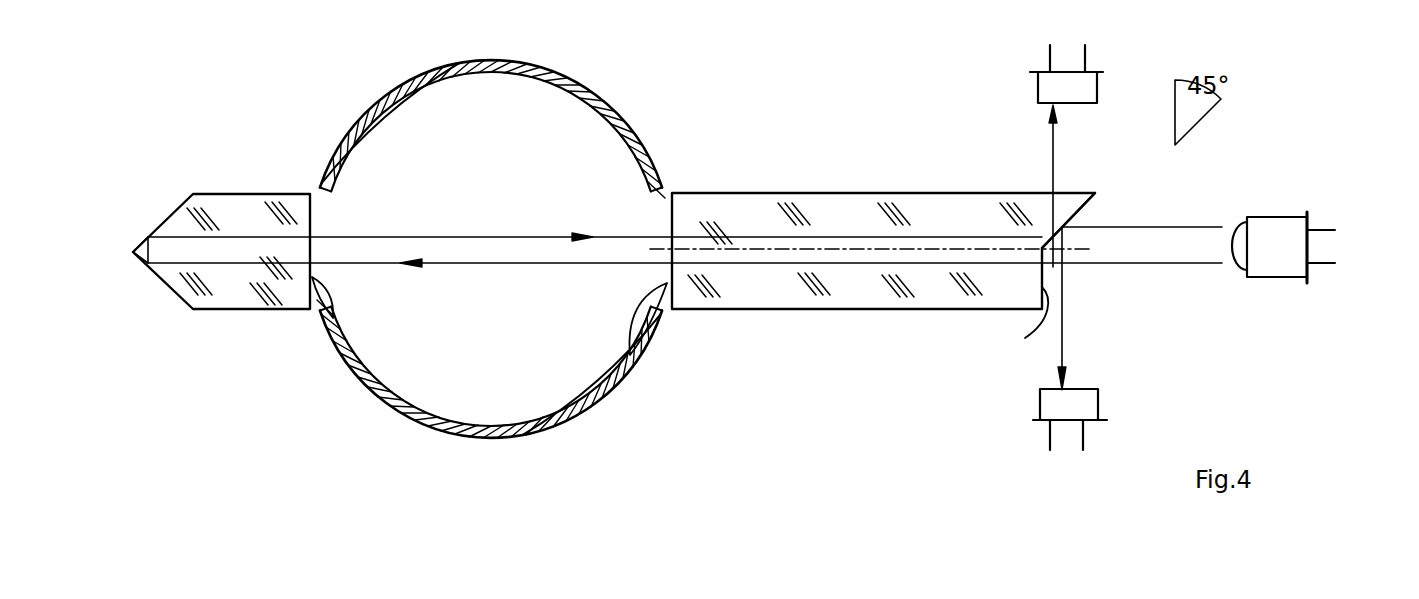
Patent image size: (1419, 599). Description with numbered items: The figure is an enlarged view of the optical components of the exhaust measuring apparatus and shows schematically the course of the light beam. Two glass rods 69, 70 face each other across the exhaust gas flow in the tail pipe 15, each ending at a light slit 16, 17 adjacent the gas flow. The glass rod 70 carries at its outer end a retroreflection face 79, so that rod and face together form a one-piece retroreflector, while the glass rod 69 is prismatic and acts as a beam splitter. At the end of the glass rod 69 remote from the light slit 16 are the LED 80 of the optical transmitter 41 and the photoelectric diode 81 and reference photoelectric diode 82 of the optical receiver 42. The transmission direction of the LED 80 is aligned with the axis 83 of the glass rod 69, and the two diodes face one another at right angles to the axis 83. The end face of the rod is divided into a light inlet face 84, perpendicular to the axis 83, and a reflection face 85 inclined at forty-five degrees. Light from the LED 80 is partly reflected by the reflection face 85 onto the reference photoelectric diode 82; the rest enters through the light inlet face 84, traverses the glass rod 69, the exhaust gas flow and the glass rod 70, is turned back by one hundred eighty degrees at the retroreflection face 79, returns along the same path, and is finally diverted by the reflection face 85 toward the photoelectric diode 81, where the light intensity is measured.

The tail pipe 15 is at (628, 123).
The light slit 16 is at (633, 357).
The light slit 17 is at (327, 352).
The optical transmitter 41 is at (1307, 250).
The optical receiver 42 is at (1030, 234).
The glass rod 69 is at (798, 193).
The glass rod 70 is at (223, 210).
The retroreflection face 79 is at (157, 267).
The LED 80 is at (1278, 268).
The photoelectric diode 81 is at (1043, 92).
The reference photoelectric diode 82 is at (1045, 406).
The axis 83 is at (695, 243).
The light inlet face 84 is at (1025, 338).
The reflection face 85 is at (1083, 210).